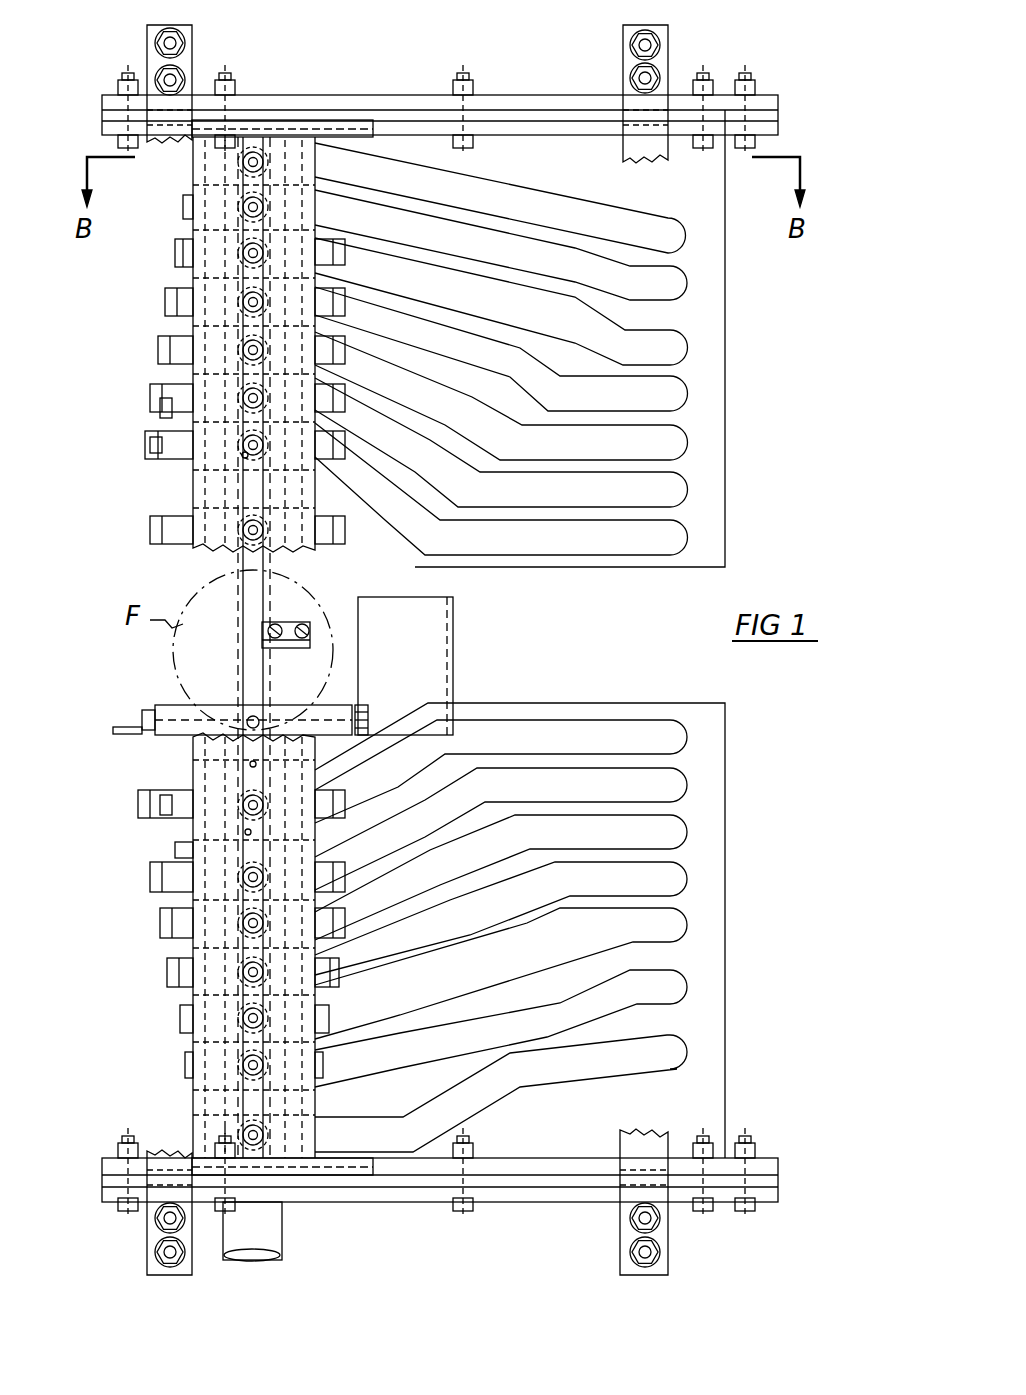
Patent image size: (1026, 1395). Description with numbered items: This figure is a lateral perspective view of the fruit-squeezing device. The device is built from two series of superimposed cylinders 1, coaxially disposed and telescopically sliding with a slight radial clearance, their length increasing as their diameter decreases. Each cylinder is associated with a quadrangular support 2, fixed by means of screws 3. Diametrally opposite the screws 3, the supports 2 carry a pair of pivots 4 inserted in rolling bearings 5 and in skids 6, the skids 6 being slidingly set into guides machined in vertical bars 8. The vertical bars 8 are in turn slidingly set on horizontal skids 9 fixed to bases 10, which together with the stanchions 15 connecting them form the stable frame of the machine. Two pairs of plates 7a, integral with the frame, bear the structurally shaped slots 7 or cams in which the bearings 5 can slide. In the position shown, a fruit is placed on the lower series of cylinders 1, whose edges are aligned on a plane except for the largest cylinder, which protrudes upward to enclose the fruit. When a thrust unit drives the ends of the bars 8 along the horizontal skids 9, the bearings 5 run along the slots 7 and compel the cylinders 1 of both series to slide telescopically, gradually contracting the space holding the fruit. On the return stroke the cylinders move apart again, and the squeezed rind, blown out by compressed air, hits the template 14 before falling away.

The cylinders 1 is at (216, 636).
The quadrangular supports 2 is at (128, 606).
The screws 3 is at (226, 586).
The pivots 4 is at (262, 768).
The rolling bearings 5 is at (245, 456).
The skids 6 is at (139, 857).
The structurally shaped slots 7 is at (536, 647).
The plates 7a is at (542, 634).
The vertical bars 8 is at (240, 647).
The horizontal skids 9 is at (440, 641).
The bases 10 is at (290, 649).
The template 14 is at (434, 666).
The stanchions 15 is at (417, 650).